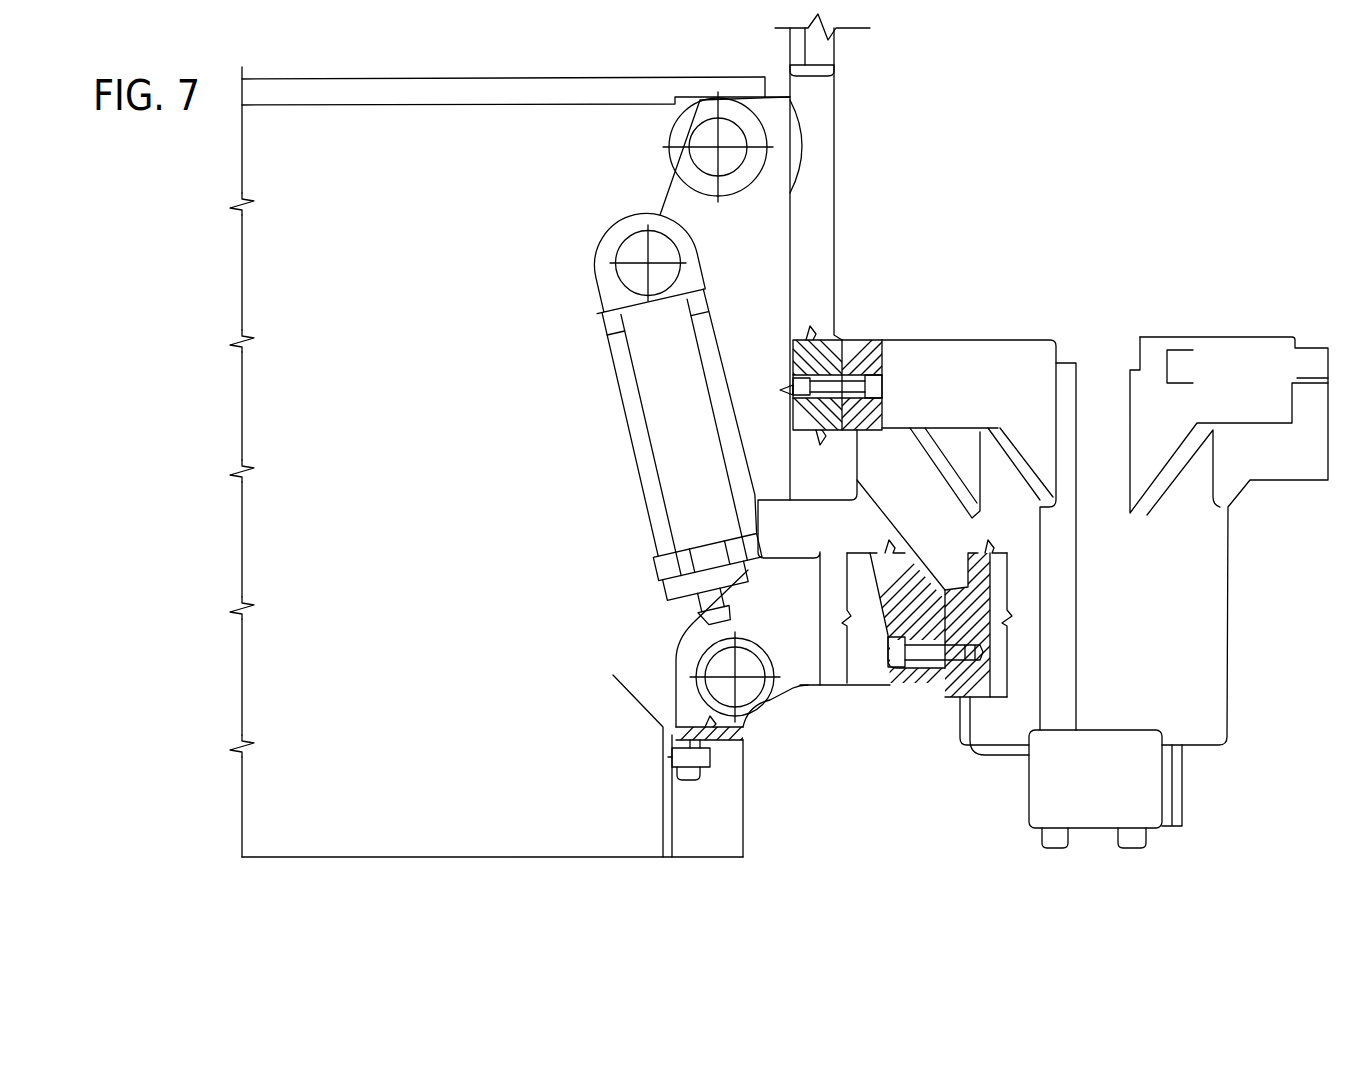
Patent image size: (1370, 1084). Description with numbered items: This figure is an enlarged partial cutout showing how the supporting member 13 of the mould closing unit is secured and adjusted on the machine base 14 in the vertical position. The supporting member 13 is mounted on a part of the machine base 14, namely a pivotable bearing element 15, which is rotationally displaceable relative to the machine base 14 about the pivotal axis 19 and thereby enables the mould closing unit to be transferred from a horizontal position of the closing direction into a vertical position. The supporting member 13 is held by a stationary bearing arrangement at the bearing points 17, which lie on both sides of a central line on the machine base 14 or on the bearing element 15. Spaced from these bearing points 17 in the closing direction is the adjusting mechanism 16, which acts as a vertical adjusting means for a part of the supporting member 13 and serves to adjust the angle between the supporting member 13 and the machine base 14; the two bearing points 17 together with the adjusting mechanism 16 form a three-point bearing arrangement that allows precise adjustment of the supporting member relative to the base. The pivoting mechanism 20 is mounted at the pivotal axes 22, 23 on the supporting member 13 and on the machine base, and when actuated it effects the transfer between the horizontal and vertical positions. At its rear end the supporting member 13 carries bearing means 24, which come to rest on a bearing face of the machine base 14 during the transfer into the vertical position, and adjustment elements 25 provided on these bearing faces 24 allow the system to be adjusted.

The supporting member 13 is at (1183, 641).
The machine base 14 is at (384, 584).
The bearing element 15 is at (815, 227).
The adjusting mechanism 16 is at (917, 662).
The bearing points 17 is at (862, 360).
The pivotal axis 19 is at (707, 157).
The pivoting mechanism 20 is at (660, 398).
The pivotal axis 22 is at (723, 692).
The pivotal axis 23 is at (633, 250).
The bearing means 24 is at (689, 775).
The adjustment elements 25 is at (697, 775).